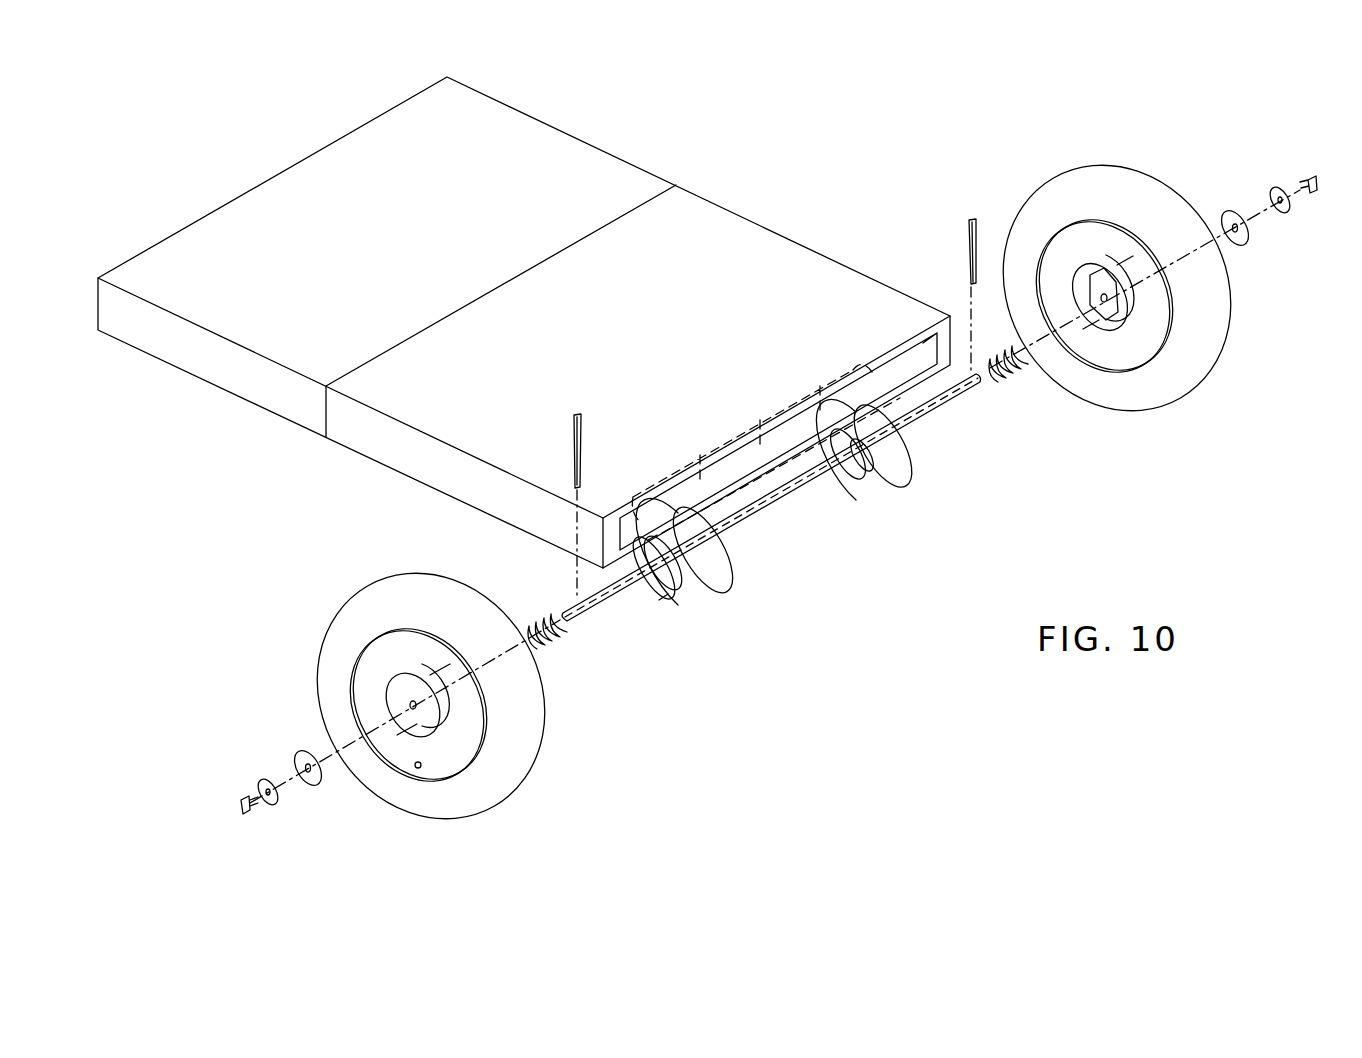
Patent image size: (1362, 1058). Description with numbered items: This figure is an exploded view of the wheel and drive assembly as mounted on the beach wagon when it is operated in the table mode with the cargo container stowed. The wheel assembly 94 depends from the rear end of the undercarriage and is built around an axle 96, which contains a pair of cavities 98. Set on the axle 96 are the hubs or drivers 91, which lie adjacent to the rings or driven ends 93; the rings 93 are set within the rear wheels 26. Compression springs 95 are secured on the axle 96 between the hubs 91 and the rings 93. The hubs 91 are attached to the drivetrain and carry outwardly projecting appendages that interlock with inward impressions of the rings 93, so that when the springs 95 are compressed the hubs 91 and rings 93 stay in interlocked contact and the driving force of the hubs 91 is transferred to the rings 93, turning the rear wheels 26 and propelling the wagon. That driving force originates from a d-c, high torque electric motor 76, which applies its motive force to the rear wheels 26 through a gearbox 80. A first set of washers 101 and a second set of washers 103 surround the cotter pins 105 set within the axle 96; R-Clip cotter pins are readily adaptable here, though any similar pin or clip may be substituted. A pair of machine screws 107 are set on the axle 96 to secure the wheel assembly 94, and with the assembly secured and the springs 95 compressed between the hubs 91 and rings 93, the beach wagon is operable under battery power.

The rear wheels 26 is at (515, 770).
The electric motor 76 is at (782, 415).
The gearbox 80 is at (718, 592).
The hubs or drivers 91 is at (663, 580).
The rings or driven ends 93 is at (445, 720).
The wheel assembly 94 is at (822, 618).
The compression springs 95 is at (555, 642).
The axle 96 is at (818, 475).
The cavities 98 is at (565, 605).
The first set of washer pairs 101 is at (325, 785).
The second set of washer pairs 103 is at (262, 775).
The cotter pins 105 is at (572, 408).
The machine screws 107 is at (243, 790).